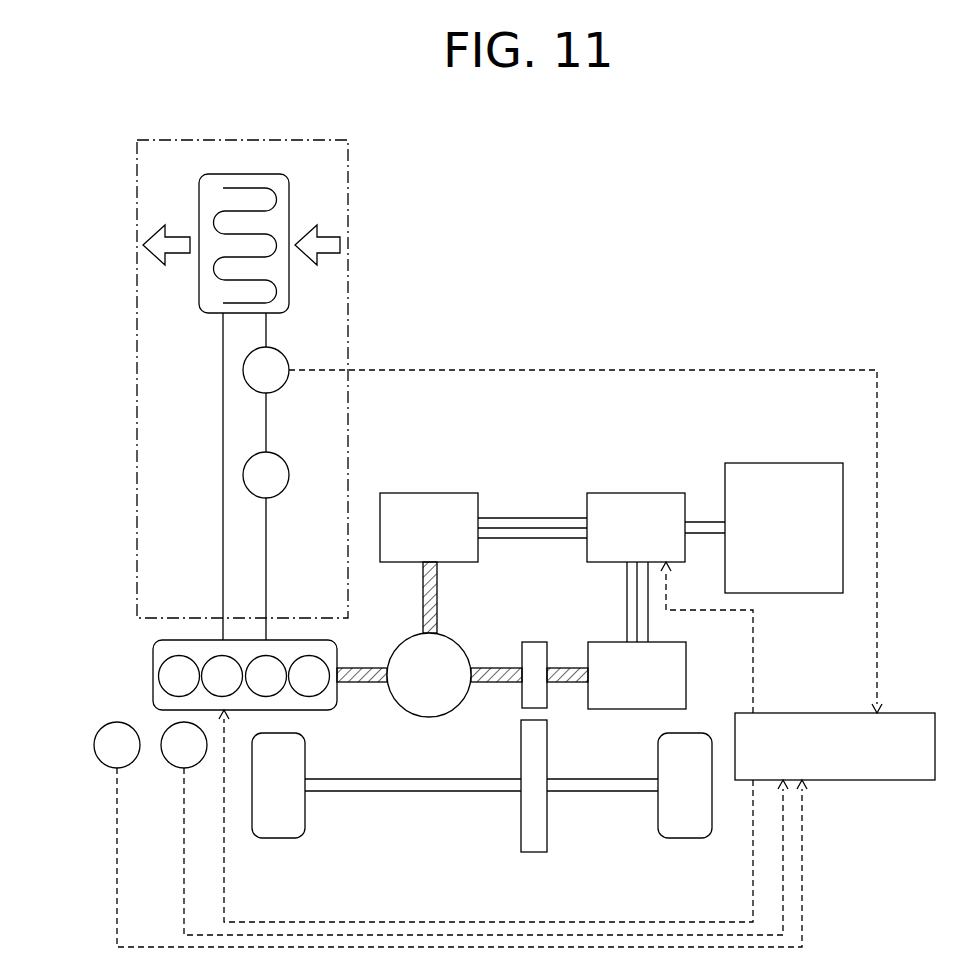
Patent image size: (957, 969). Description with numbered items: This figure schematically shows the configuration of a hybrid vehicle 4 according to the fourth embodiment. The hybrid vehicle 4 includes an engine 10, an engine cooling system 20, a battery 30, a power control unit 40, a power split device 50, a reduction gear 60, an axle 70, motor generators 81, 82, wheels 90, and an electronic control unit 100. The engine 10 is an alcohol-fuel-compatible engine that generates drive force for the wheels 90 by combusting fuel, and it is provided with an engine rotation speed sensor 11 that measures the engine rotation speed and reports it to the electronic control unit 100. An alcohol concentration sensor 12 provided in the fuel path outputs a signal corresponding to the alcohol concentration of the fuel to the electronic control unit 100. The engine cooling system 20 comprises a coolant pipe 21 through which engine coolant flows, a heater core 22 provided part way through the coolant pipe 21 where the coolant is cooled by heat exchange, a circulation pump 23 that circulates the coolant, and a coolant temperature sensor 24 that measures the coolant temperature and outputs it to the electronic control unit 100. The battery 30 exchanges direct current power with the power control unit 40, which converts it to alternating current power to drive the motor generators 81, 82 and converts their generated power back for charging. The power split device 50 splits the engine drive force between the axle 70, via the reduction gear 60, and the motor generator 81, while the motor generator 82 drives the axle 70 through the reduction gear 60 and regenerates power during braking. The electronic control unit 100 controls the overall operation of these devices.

The hybrid vehicle 4 is at (768, 128).
The engine 10 is at (153, 651).
The engine rotation speed sensor 11 is at (162, 738).
The alcohol concentration sensor 12 is at (94, 745).
The engine cooling system 20 is at (300, 140).
The coolant pipe 21 is at (222, 590).
The heater core 22 is at (258, 174).
The circulation pump 23 is at (282, 461).
The coolant temperature sensor 24 is at (282, 356).
The battery 30 is at (806, 463).
The power control unit 40 is at (657, 493).
The power split device 50 is at (425, 718).
The reduction gear 60 is at (534, 853).
The axle 70 is at (432, 793).
The motor generator 81 is at (437, 493).
The motor generator 82 is at (655, 642).
The wheels 90 is at (280, 840).
The electronic control unit 100 is at (892, 713).